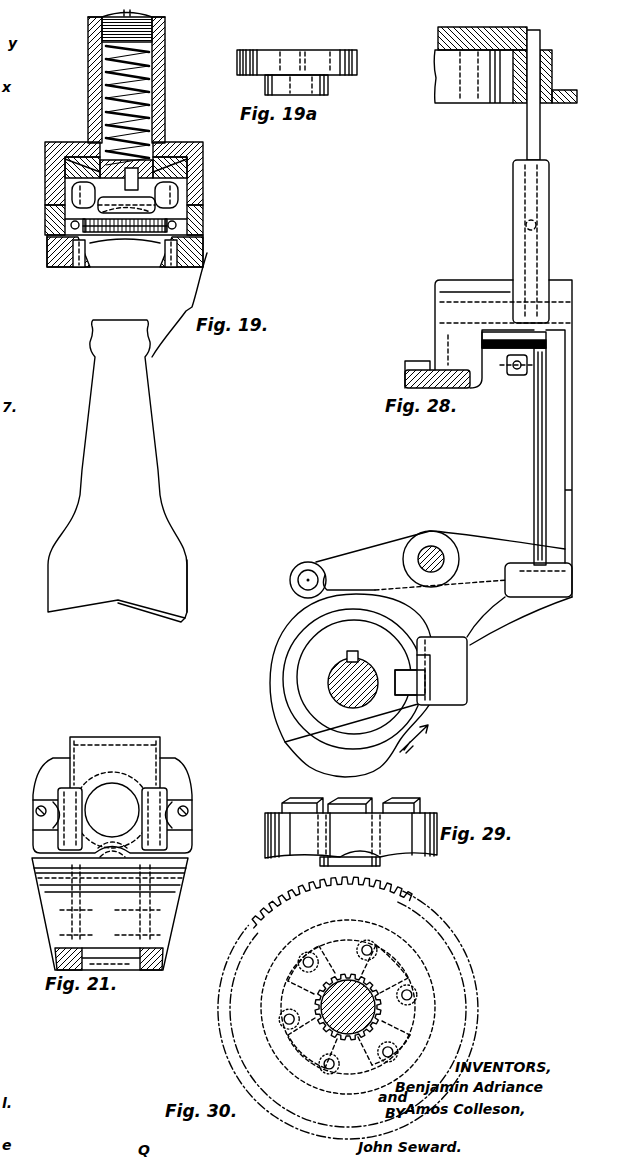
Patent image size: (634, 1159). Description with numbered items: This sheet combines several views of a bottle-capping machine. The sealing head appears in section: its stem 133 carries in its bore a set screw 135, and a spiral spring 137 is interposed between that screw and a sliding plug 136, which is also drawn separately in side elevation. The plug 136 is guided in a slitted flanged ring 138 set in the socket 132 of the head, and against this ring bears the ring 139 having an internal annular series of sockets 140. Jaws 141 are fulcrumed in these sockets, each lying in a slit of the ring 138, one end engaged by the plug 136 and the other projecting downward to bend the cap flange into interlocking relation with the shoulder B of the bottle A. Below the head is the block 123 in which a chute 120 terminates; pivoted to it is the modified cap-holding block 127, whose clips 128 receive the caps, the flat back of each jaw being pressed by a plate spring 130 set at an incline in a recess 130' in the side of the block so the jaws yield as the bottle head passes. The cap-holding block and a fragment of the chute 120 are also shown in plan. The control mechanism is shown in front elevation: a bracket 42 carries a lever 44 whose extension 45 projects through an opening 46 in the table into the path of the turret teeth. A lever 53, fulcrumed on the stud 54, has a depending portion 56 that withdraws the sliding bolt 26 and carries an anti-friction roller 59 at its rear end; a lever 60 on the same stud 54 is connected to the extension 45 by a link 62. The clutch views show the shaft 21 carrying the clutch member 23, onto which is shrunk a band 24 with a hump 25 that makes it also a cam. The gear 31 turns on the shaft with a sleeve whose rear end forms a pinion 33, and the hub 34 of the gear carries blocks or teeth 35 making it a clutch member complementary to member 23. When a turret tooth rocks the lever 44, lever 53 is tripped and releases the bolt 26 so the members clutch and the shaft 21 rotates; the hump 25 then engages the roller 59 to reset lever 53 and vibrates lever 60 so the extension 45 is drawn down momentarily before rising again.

In FIG. 19, the stem 133 is at (165, 128).
In FIG. 19, the set screw 135 is at (165, 33).
In FIG. 19, the spiral spring 137 is at (140, 88).
In FIG. 19, the sliding plug 136 is at (62, 158).
In FIG. 19a, the sliding plug 136 is at (246, 75).
In FIG. 19, the slitted flanged ring 138 is at (185, 165).
In FIG. 19, the socket 132 is at (203, 185).
In FIG. 19, the ring 139 is at (66, 185).
In FIG. 19, the sockets 140 is at (180, 198).
In FIG. 19, the plate spring 130 is at (170, 215).
In FIG. 21, the plate spring 130 is at (132, 828).
In FIG. 19, the block 123 is at (45, 207).
In FIG. 19, the jaws 141 is at (58, 223).
In FIG. 19, the block 127 is at (203, 248).
In FIG. 19, the recess 130' is at (134, 256).
In FIG. 21, the recess 130' is at (133, 819).
In FIG. 19, the clips 128 is at (83, 224).
In FIG. 21, the clips 128 is at (155, 800).
In FIG. 19, the bottle A is at (184, 573).
In FIG. 19, the shoulder B is at (148, 322).
In FIG. 28, the opening 46 is at (540, 70).
In FIG. 28, the extension 45 is at (540, 147).
In FIG. 28, the lever 44 is at (549, 245).
In FIG. 28, the bracket 42 is at (435, 340).
In FIG. 28, the link 62 is at (534, 425).
In FIG. 28, the stud 54 is at (436, 553).
In FIG. 28, the lever 60 is at (340, 557).
In FIG. 28, the anti-friction roller 59 is at (297, 589).
In FIG. 28, the lever 53 is at (496, 617).
In FIG. 28, the band 24 is at (270, 683).
In FIG. 28, the hump 25 is at (305, 757).
In FIG. 28, the clutch member 23 is at (300, 698).
In FIG. 28, the shaft 21 is at (353, 709).
In FIG. 29, the shaft 21 is at (382, 862).
In FIG. 30, the shaft 21 is at (348, 1007).
In FIG. 28, the sliding bolt 26 is at (392, 672).
In FIG. 28, the depending portion 56 is at (455, 706).
In FIG. 21, the chute 120 is at (165, 930).
In FIG. 29, the hub 34 is at (268, 822).
In FIG. 30, the hub 34 is at (318, 930).
In FIG. 29, the blocks or teeth 35 is at (410, 805).
In FIG. 30, the blocks or teeth 35 is at (400, 968).
In FIG. 30, the gear 31 is at (265, 916).
In FIG. 30, the pinion 33 is at (318, 1005).